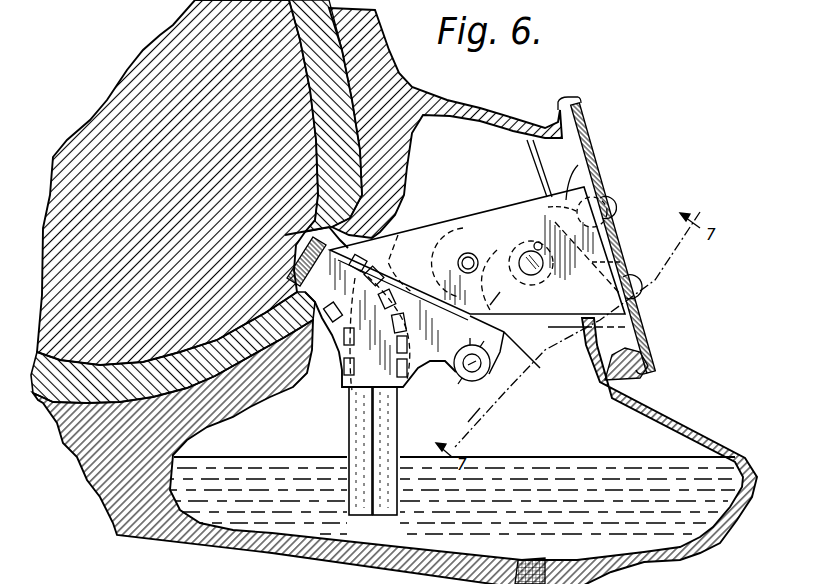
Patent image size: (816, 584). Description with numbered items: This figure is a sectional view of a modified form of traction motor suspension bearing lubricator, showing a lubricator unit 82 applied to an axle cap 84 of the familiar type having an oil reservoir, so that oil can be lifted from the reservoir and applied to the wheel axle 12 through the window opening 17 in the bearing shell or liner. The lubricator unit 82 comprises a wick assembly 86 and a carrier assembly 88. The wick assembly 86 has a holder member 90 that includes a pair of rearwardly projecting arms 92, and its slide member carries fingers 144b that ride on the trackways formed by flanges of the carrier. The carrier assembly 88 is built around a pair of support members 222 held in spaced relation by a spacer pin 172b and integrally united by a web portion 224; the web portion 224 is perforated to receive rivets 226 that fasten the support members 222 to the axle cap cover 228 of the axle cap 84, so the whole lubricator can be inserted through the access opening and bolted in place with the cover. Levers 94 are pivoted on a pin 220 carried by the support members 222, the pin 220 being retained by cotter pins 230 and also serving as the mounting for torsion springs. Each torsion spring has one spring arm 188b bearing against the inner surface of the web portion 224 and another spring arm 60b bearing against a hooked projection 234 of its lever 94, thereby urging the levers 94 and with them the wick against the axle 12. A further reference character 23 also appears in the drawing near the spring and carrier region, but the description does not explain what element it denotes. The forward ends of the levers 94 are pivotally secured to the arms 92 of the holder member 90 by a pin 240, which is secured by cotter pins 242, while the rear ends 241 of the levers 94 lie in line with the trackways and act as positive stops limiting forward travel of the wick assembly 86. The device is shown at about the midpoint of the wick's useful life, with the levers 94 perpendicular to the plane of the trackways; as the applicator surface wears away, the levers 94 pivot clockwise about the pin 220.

The wheel axle 12 is at (140, 90).
The window opening 17 is at (296, 231).
The pin 23 is at (548, 207).
The spring arm 60b is at (489, 268).
The lubricator unit 82 is at (469, 216).
The axle cap 84 is at (684, 418).
The wick assembly 86 is at (334, 398).
The carrier assembly 88 is at (620, 212).
The holder member 90 is at (412, 389).
The rearwardly projecting arms 92 is at (444, 378).
The levers 94 is at (493, 344).
The fingers 144b is at (398, 258).
The spacer pin 172b is at (455, 248).
The torsion spring arms 188b is at (640, 218).
The pin 220 is at (537, 278).
The support members 222 is at (592, 148).
The web portion 224 is at (356, 581).
The rivets 226 is at (603, 200).
The axle cap cover 228 is at (641, 331).
The cotter pins 230 is at (540, 243).
The hooked projections 234 is at (456, 264).
The pin 240 is at (481, 407).
The rear ends 241 is at (507, 297).
The cotter pins 242 is at (515, 341).